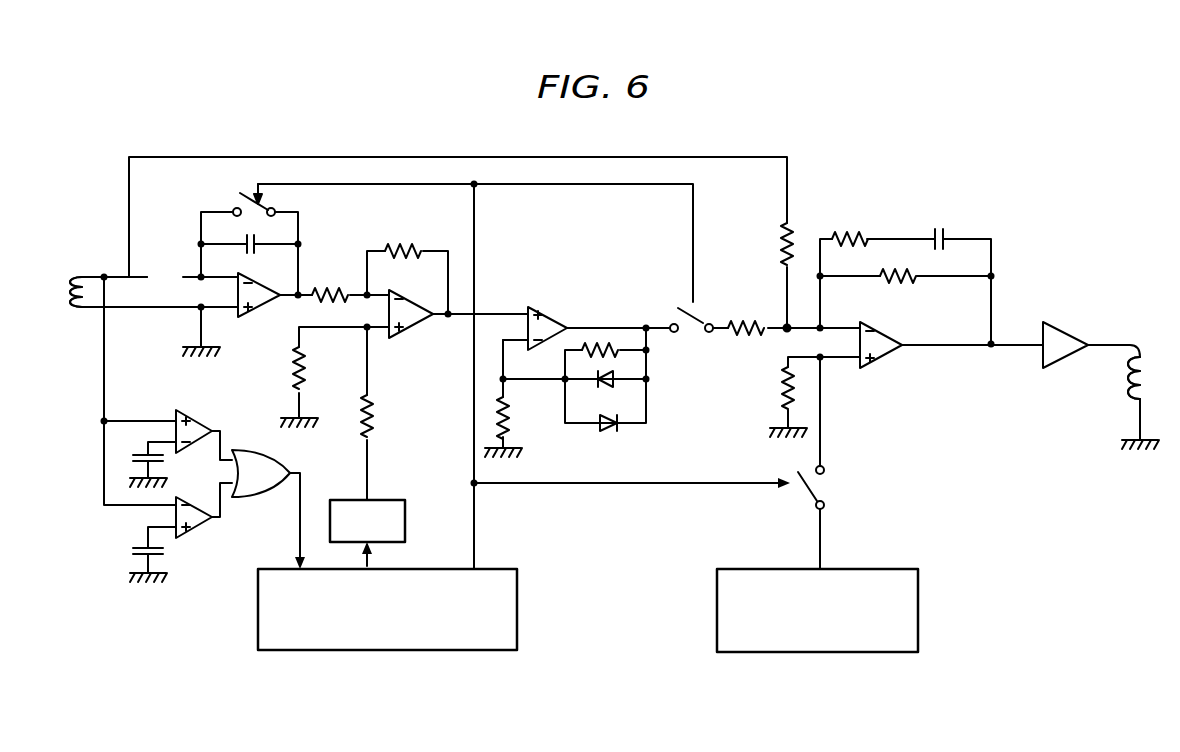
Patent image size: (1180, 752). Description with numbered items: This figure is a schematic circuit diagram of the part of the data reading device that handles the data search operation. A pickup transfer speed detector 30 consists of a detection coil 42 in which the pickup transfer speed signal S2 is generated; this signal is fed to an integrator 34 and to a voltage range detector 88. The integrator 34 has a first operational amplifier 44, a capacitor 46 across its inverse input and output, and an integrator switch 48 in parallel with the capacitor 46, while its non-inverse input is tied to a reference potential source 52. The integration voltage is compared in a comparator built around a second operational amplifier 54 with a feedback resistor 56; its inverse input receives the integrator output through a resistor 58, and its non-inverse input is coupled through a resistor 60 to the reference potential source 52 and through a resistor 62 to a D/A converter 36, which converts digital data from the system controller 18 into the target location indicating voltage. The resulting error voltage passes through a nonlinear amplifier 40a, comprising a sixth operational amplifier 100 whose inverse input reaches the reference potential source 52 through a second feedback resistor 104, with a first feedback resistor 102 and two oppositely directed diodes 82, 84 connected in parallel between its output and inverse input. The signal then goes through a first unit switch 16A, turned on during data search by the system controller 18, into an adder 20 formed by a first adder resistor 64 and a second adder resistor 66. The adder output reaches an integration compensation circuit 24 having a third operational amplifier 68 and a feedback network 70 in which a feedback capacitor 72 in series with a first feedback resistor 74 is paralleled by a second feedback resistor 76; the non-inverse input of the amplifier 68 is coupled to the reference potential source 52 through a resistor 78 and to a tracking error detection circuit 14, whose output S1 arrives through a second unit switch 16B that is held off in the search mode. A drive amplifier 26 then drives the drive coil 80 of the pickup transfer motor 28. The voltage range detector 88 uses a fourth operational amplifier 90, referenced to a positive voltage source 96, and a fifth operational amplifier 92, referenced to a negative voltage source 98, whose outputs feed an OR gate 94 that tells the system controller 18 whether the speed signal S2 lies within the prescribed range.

The tracking error detection circuit 14 is at (918, 617).
The first unit switch 16A is at (693, 337).
The second unit switch 16B is at (826, 487).
The system controller 18 is at (517, 615).
The adder 20 is at (776, 304).
The integration compensation circuit 24 is at (939, 310).
The drive amplifier 26 is at (1064, 331).
The pickup transfer motor 28 is at (1134, 378).
The pickup transfer speed detector 30 is at (76, 292).
The integrator 34 is at (283, 264).
The target location indicating voltage generator 36 is at (405, 522).
The nonlinear amplifier 40a is at (570, 313).
The detection coil 42 is at (76, 277).
The first operational amplifier 44 is at (257, 309).
The capacitor 46 is at (253, 252).
The integrator switch 48 is at (263, 192).
The reference potential source 52 is at (215, 352).
The second operational amplifier 54 is at (412, 298).
The feedback resistor 56 is at (410, 246).
The resistor 58 is at (330, 290).
The resistor 60 is at (306, 360).
The resistor 62 is at (375, 410).
The first adder resistor 64 is at (748, 337).
The second adder resistor 66 is at (795, 240).
The third operational amplifier 68 is at (878, 361).
The feedback network 70 is at (939, 259).
The feedback capacitor 72 is at (947, 236).
The first feedback resistor 74 is at (858, 233).
The second feedback resistor 76 is at (910, 292).
The resistor 78 is at (780, 395).
The drive coil 80 is at (1128, 384).
The diode 82 is at (608, 387).
The diode 84 is at (610, 431).
The voltage range detector 88 is at (204, 510).
The fourth operational amplifier 90 is at (196, 419).
The fifth operational amplifier 92 is at (196, 530).
The OR gate 94 is at (276, 468).
The prescribed positive voltage source 96 is at (160, 461).
The prescribed negative voltage source 98 is at (136, 549).
The sixth operational amplifier 100 is at (545, 346).
The first feedback resistor 102 is at (603, 345).
The second feedback resistor 104 is at (510, 410).
The tracking error signal S1 is at (822, 540).
The pickup transfer speed signal S2 is at (122, 277).